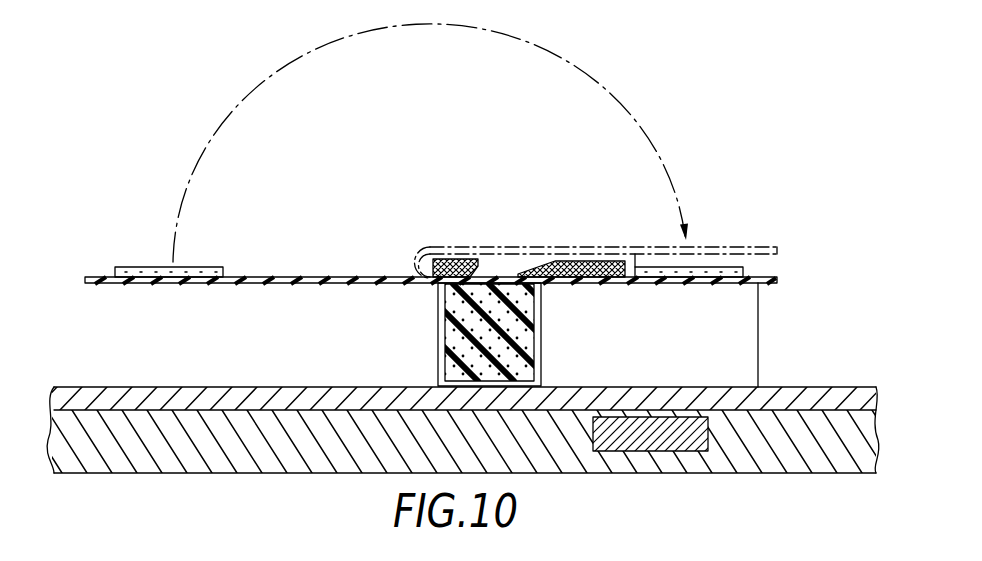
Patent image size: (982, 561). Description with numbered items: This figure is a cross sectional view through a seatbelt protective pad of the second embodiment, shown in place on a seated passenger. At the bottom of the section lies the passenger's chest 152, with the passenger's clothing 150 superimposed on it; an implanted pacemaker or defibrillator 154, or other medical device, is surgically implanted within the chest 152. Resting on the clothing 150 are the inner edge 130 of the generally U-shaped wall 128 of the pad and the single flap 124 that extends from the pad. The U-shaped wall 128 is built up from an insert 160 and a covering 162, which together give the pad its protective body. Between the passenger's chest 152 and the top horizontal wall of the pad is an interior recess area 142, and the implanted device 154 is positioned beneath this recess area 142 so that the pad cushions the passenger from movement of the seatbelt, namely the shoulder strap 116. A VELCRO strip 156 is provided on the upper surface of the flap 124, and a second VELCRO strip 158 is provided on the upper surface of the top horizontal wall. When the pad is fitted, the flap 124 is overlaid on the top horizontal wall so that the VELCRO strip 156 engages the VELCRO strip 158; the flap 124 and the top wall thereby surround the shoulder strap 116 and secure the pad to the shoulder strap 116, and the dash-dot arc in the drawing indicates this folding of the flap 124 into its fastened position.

The shoulder strap 116 is at (585, 260).
The flap 124 is at (290, 277).
The U-shaped wall 128 is at (479, 334).
The inner edge 130 is at (520, 392).
The recess area 142 is at (734, 353).
The passenger's clothing 150 is at (456, 426).
The passenger's chest 152 is at (830, 460).
The implanted pacemaker or defibrillator 154 is at (650, 452).
The VELCRO strip 156 is at (203, 263).
The VELCRO strip 158 is at (747, 272).
The insert 160 is at (441, 361).
The covering 162 is at (541, 338).